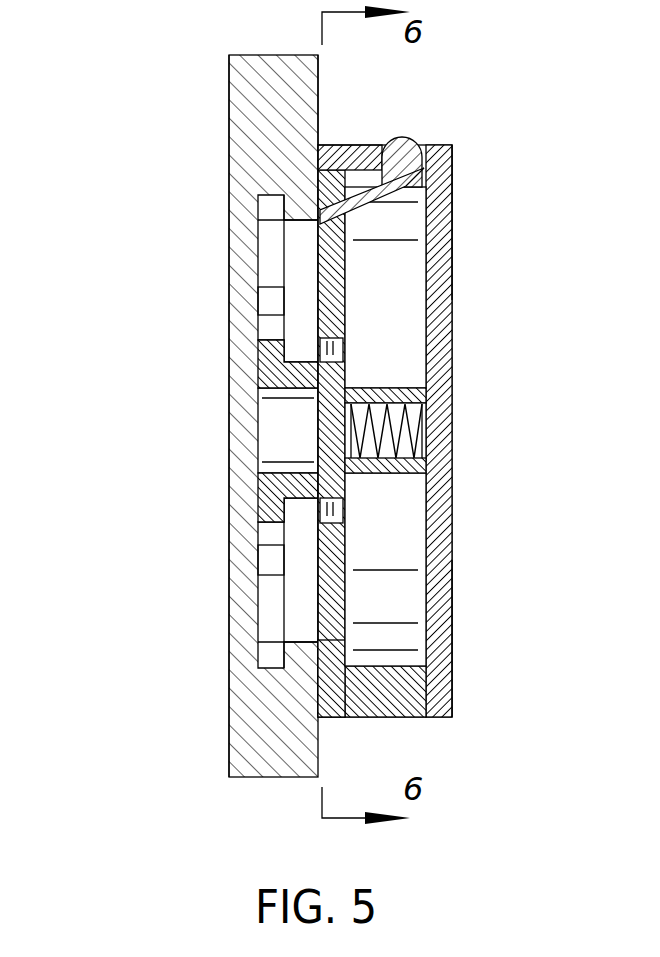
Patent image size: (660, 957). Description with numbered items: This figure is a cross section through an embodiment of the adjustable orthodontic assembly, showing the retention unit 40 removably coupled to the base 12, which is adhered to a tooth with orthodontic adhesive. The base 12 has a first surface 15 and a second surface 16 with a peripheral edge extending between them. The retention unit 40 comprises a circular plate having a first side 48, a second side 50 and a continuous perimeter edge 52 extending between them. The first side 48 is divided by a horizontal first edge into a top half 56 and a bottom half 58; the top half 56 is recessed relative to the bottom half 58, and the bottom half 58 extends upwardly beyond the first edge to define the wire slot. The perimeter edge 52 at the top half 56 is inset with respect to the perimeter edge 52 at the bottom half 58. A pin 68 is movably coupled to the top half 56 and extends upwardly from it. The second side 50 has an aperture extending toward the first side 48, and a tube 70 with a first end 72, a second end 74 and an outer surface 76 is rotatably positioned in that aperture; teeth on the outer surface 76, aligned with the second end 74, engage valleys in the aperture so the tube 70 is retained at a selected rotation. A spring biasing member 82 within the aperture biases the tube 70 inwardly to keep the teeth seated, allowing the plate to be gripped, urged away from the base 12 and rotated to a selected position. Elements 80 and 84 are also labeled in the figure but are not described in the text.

The base 12 is at (243, 55).
The first surface 15 is at (228, 115).
The second surface 16 is at (318, 100).
The retention unit 40 is at (480, 173).
The first side 48 is at (452, 636).
The second side 50 is at (318, 700).
The perimeter edge 52 is at (437, 717).
The top half 56 is at (356, 283).
The bottom half 58 is at (474, 587).
The pin 68 is at (410, 140).
The tube 70 is at (301, 362).
The first end 72 is at (260, 385).
The second end 74 is at (345, 376).
The outer surface 76 is at (343, 347).
The bushing 80 is at (283, 312).
The spring biasing member 82 is at (417, 420).
The side wall 84 is at (452, 236).